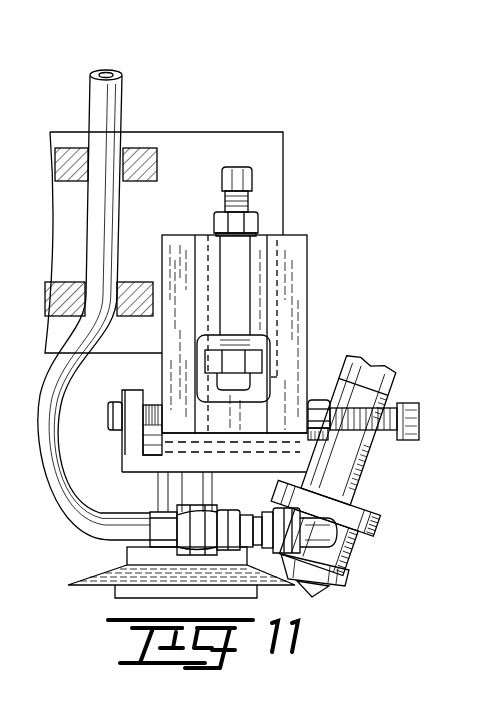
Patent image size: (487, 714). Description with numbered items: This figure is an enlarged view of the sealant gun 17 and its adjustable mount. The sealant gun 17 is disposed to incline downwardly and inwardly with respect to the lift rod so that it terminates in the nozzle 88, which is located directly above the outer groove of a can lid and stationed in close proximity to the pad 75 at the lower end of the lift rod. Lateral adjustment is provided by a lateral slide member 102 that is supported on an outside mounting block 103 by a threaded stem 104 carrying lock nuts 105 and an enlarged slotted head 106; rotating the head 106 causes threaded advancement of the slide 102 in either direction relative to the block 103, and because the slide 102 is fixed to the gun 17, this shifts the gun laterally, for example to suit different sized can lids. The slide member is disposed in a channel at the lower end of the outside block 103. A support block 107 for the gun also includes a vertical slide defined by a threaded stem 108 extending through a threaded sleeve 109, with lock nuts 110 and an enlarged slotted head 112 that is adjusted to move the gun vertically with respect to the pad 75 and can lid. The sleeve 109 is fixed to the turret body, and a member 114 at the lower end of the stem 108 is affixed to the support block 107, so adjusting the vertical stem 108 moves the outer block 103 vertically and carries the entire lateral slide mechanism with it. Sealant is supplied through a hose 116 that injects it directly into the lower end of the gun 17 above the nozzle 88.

The sealant gun 17 is at (378, 491).
The pad 75 is at (132, 588).
The nozzle 88 is at (318, 590).
The lateral slide member 102 is at (123, 463).
The outside mounting block 103 is at (300, 290).
The threaded stem 104 is at (363, 408).
The lock nuts 105 is at (318, 400).
The enlarged slotted head 106 is at (419, 412).
The support block 107 is at (283, 183).
The threaded stem 108 is at (250, 203).
The threaded sleeve 109 is at (262, 234).
The lock nuts 110 is at (214, 225).
The enlarged slotted head 112 is at (252, 172).
The member 114 is at (252, 358).
The hose 116 is at (338, 531).